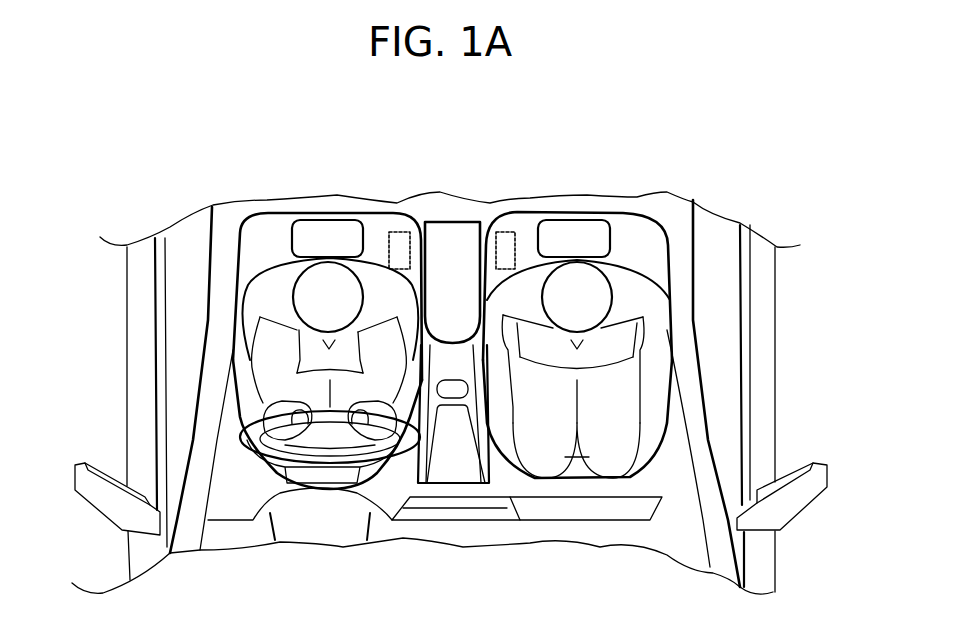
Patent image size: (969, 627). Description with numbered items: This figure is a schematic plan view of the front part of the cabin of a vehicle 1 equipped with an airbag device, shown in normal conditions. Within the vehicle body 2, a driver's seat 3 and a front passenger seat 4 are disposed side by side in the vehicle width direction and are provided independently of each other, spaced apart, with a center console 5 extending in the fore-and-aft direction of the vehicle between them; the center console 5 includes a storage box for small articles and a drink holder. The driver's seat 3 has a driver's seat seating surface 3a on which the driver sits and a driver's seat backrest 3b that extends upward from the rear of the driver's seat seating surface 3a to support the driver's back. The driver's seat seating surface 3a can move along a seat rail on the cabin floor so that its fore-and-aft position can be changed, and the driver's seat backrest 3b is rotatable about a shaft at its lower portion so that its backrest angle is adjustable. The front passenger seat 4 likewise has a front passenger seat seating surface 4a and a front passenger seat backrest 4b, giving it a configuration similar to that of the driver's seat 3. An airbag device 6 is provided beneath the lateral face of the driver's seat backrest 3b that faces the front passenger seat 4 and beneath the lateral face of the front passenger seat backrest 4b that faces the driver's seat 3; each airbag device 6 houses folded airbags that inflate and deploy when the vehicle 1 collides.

The vehicle 1 is at (119, 318).
The vehicle body 2 is at (131, 356).
The driver's seat 3 is at (262, 255).
The driver's seat seating surface 3a is at (254, 396).
The driver's seat backrest 3b is at (277, 235).
The front passenger seat 4 is at (645, 256).
The front passenger seat seating surface 4a is at (654, 393).
The front passenger seat backrest 4b is at (623, 237).
The center console 5 is at (459, 236).
The airbag device 6 is at (404, 238).